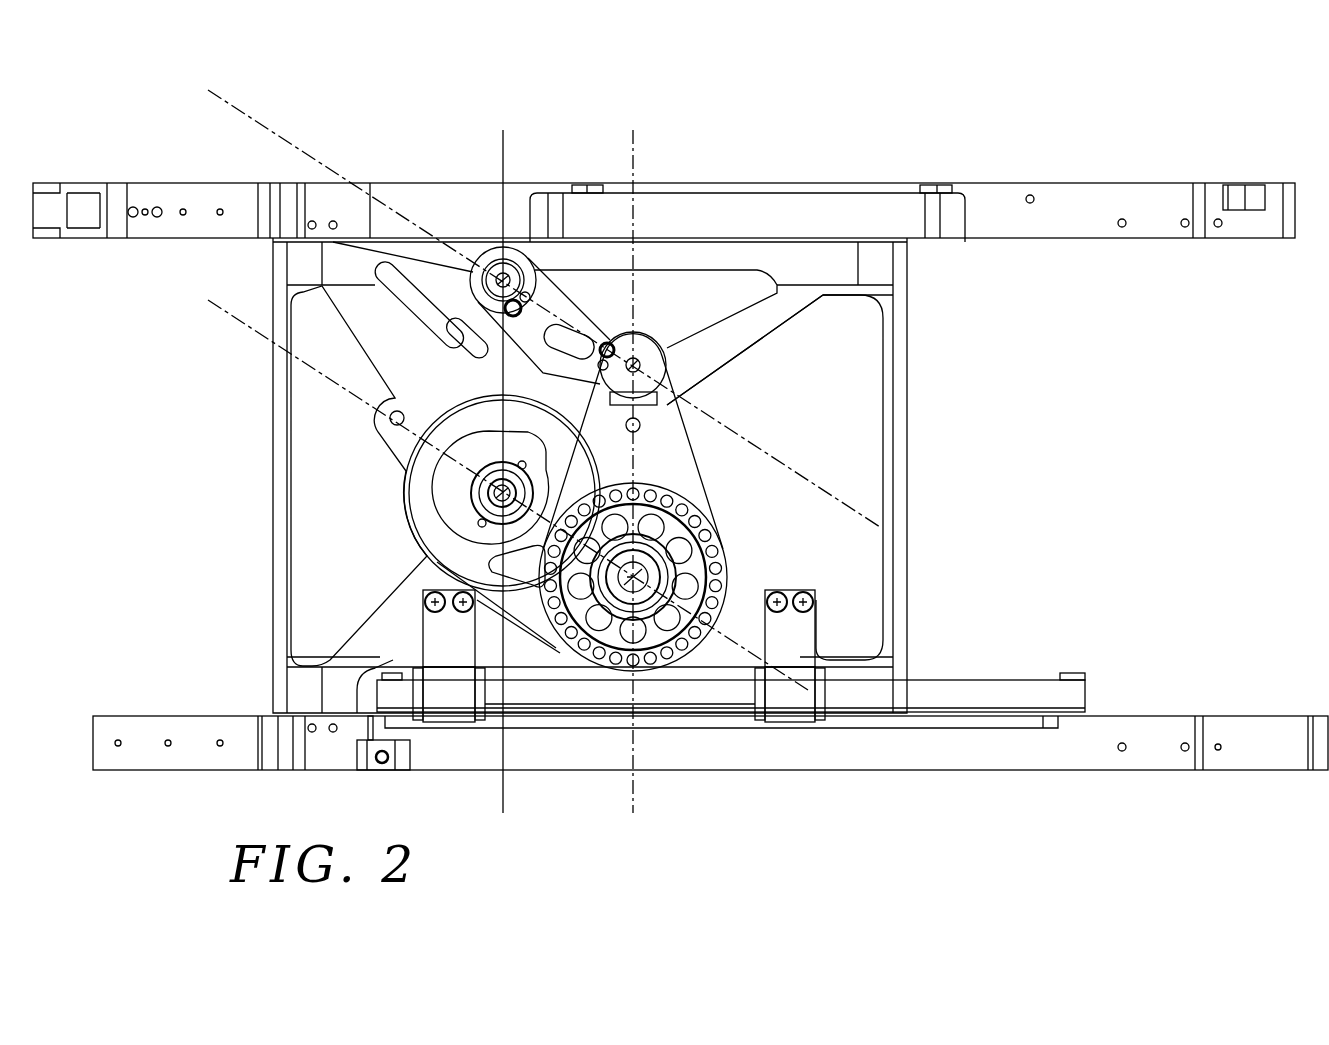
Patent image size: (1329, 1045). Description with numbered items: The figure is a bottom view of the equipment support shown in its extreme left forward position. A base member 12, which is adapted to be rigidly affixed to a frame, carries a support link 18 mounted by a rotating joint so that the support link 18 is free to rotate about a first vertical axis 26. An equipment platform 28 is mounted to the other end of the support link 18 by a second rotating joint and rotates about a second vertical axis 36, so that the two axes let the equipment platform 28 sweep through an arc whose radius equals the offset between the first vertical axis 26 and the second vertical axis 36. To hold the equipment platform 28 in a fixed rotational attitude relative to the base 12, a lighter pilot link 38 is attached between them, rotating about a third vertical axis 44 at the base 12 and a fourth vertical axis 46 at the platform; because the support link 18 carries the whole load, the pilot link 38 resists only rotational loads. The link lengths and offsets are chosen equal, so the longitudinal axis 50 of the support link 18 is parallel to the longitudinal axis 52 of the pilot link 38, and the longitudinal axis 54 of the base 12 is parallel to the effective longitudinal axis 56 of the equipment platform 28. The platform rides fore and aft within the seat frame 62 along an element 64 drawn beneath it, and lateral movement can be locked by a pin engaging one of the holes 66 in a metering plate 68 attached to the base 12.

The base member 12 is at (668, 465).
The support link 18 is at (425, 520).
The first vertical axis 26 is at (712, 548).
The equipment platform 28 is at (897, 553).
The second vertical axis 36 is at (492, 493).
The pilot link 38 is at (545, 268).
The third vertical axis 44 is at (638, 357).
The fourth vertical axis 46 is at (495, 262).
The longitudinal axis of support link 50 is at (245, 332).
The longitudinal axis of pilot link 52 is at (265, 135).
The longitudinal axis of base 54 is at (633, 796).
The effective longitudinal axis of equipment platform 56 is at (503, 796).
The seat frame 62 is at (1257, 722).
The slide bar 64 is at (1008, 692).
The holes 66 is at (697, 521).
The metering plate 68 is at (738, 585).